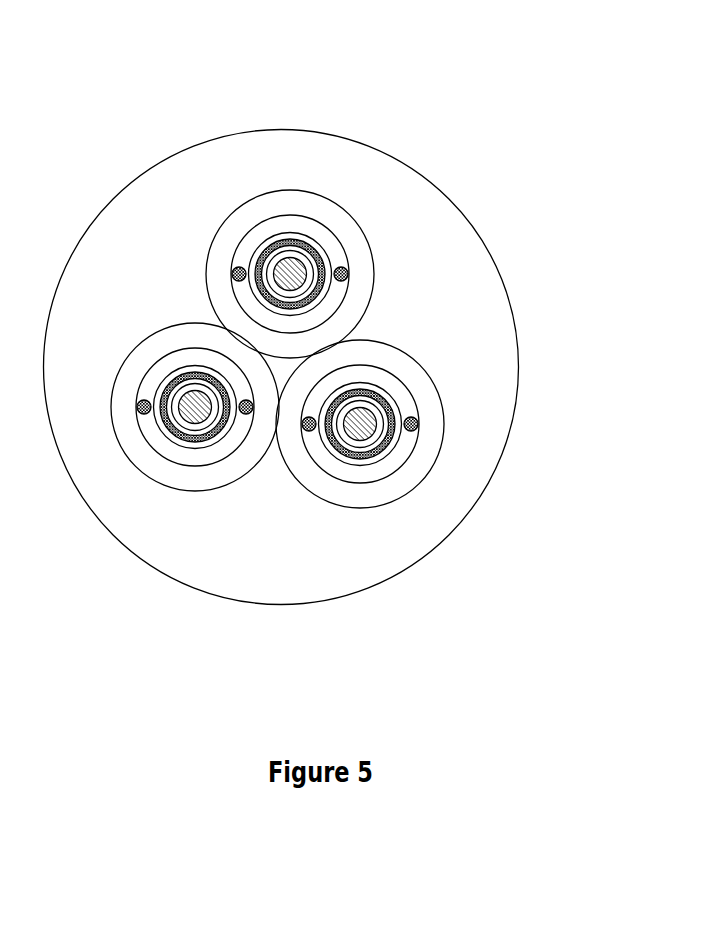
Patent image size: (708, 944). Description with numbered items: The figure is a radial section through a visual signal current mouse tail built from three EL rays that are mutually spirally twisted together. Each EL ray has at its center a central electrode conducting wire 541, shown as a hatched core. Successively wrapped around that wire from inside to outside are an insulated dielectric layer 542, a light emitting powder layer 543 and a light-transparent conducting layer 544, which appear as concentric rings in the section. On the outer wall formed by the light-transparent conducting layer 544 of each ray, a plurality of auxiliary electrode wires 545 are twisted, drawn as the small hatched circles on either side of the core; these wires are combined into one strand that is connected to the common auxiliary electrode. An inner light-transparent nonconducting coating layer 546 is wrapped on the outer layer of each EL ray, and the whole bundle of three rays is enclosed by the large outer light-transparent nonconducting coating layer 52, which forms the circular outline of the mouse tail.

The light-transparent nonconducting coating layer 52 is at (468, 267).
The central electrode conducting wire 541 is at (300, 280).
The insulated dielectric layer 542 is at (293, 242).
The light emitting powder layer 543 is at (315, 243).
The light-transparent conducting layer 544 is at (260, 245).
The auxiliary electrode wire 545 is at (235, 270).
The inner light-transparent nonconducting coating layer 546 is at (358, 246).